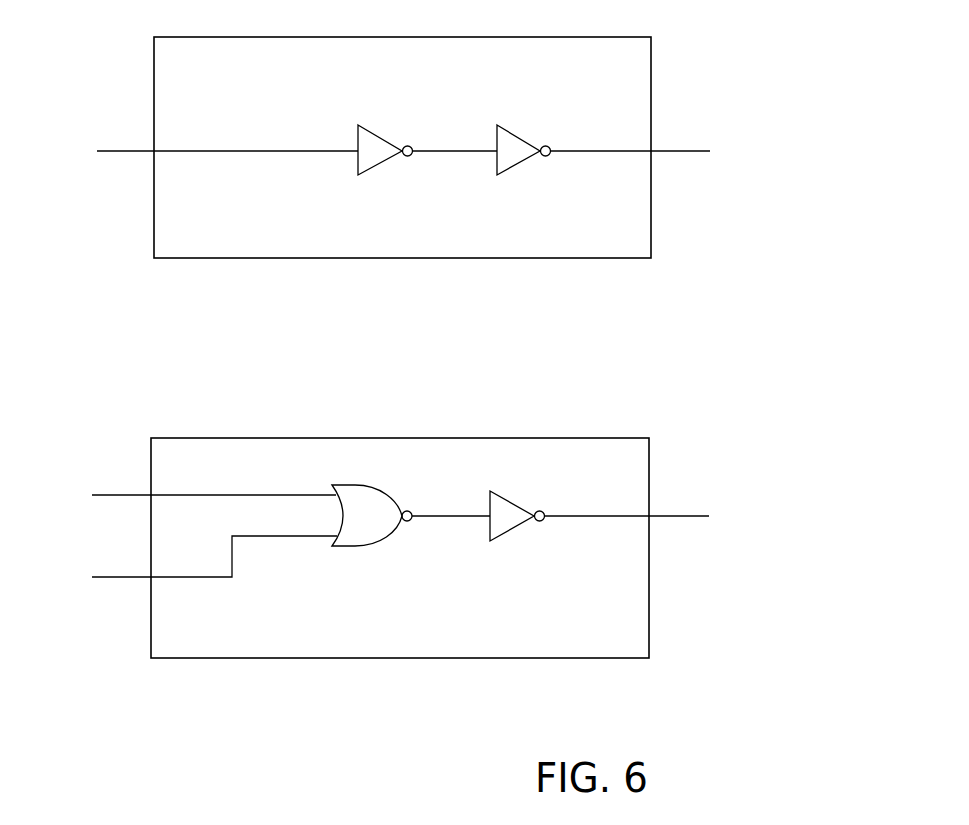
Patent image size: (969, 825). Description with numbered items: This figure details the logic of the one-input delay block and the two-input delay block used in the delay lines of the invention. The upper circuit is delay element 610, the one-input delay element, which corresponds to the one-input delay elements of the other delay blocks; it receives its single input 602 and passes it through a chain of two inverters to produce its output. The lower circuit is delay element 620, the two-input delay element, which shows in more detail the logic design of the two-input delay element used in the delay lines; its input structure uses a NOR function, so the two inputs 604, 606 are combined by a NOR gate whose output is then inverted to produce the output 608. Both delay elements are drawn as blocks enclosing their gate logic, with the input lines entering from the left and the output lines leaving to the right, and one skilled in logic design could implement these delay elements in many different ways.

The input signal line 602 is at (116, 148).
The first input signal line 604 is at (112, 493).
The second input signal line 606 is at (107, 576).
The output signal line 608 is at (688, 517).
The delay element 610 is at (803, 102).
The delay element 620 is at (772, 450).